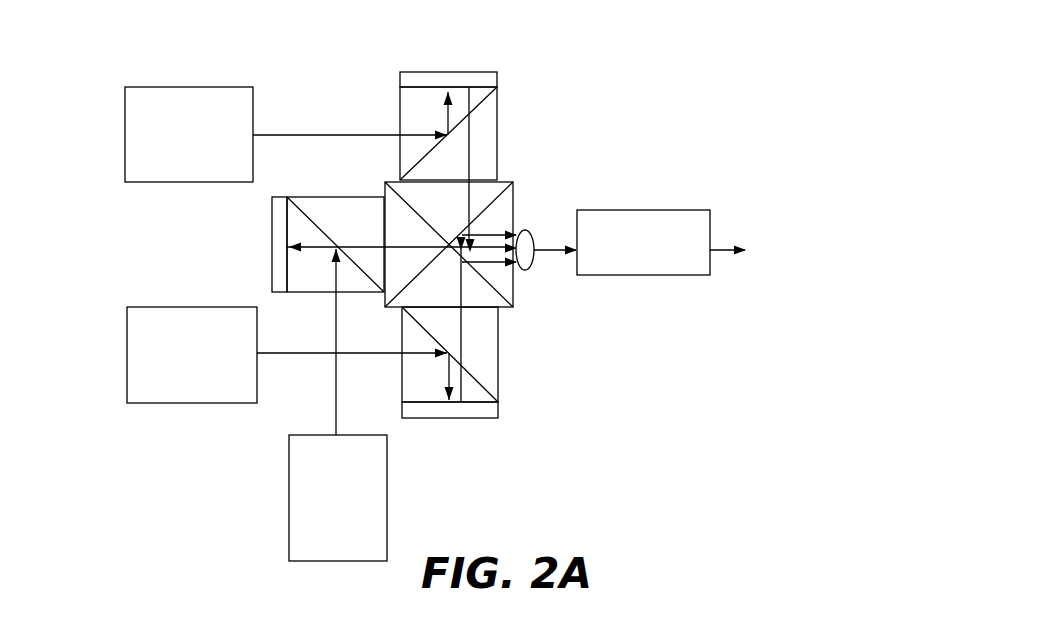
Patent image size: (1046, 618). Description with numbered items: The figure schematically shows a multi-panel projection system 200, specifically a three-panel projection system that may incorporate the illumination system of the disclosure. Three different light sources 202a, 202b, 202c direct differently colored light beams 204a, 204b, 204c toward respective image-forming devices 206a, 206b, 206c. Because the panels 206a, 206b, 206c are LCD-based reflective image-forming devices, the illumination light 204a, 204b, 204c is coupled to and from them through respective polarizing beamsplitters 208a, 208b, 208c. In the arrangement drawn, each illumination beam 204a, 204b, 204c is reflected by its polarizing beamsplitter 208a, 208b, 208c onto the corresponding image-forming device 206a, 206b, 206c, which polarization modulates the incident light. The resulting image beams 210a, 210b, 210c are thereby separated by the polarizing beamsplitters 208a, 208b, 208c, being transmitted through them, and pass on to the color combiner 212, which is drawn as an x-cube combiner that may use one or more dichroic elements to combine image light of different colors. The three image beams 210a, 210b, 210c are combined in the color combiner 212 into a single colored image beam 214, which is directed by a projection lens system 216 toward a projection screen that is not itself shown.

The projection system 200 is at (628, 104).
The light source 202a is at (125, 135).
The light source 202b is at (127, 362).
The light source 202c is at (289, 525).
The light beam 204a is at (325, 135).
The light beam 204b is at (290, 353).
The light beam 204c is at (330, 405).
The image-forming device 206a is at (443, 72).
The image-forming device 206b is at (458, 418).
The image-forming device 206c is at (272, 240).
The polarizing beamsplitter 208a is at (498, 110).
The polarizing beamsplitter 208b is at (498, 383).
The polarizing beamsplitter 208c is at (312, 197).
The image beam 210a is at (470, 155).
The image beam 210b is at (463, 330).
The image beam 210c is at (362, 247).
The color combiner 212 is at (515, 205).
The colored image beam 214 is at (553, 255).
The projection lens system 216 is at (645, 210).